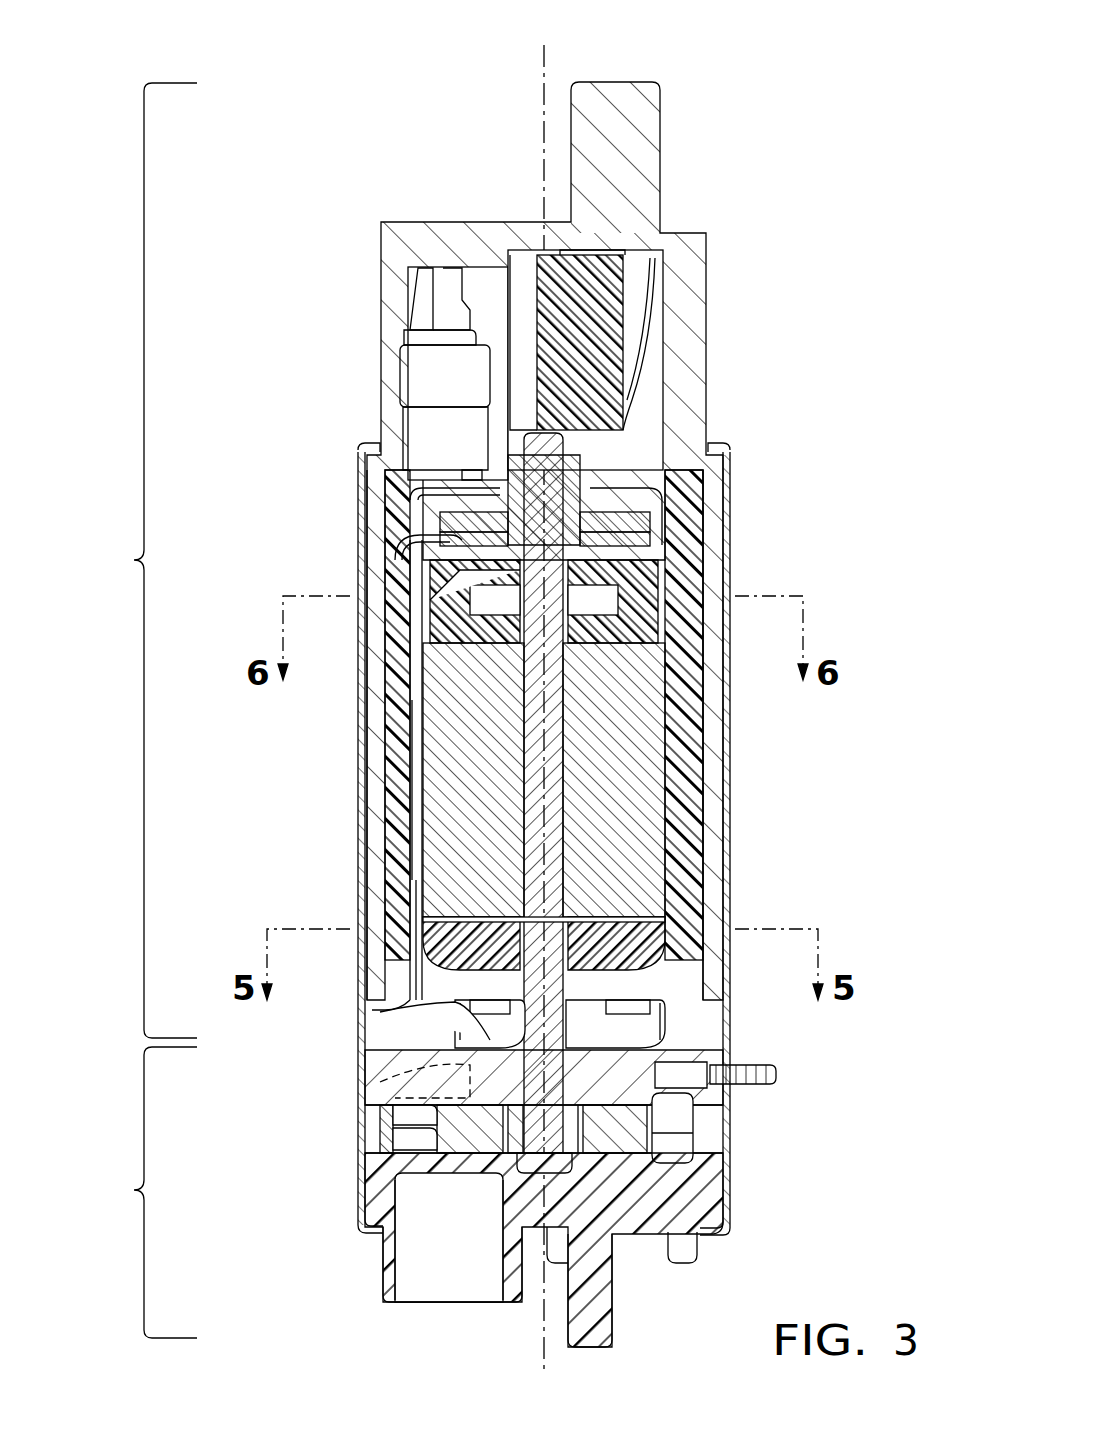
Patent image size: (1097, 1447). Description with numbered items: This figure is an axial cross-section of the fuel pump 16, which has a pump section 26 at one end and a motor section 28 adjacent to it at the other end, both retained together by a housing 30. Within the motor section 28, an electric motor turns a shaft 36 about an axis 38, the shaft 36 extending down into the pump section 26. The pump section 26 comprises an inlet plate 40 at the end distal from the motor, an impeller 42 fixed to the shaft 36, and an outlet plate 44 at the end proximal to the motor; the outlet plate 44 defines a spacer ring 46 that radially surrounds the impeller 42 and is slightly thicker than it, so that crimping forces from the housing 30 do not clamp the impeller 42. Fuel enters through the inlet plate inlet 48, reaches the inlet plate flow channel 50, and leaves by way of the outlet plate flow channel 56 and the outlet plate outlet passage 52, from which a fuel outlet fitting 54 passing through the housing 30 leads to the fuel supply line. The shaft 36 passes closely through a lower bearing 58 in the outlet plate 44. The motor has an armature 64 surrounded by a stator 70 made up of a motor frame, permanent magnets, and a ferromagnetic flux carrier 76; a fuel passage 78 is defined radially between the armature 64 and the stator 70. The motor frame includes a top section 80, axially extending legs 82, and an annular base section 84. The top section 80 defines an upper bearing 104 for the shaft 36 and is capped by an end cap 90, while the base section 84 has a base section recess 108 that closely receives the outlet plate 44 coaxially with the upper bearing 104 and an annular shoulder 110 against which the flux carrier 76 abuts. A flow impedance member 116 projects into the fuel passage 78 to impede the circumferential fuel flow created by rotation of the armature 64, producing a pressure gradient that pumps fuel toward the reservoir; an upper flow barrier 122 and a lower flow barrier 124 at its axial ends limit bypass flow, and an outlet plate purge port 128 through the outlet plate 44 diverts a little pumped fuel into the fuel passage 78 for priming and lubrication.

The fuel pump 16 is at (784, 58).
The pump section 26 is at (142, 1192).
The motor section 28 is at (142, 560).
The housing 30 is at (726, 452).
The shaft 36 is at (553, 800).
The axis 38 is at (556, 40).
The inlet plate 40 is at (700, 1205).
The impeller 42 is at (700, 1145).
The outlet plate 44 is at (690, 1053).
The spacer ring 46 is at (470, 1140).
The inlet plate inlet 48 is at (425, 1285).
The inlet plate flow channel 50 is at (650, 1165).
The outlet plate outlet passage 52 is at (700, 1100).
The fuel outlet fitting 54 is at (740, 1085).
The outlet plate flow channel 56 is at (693, 1120).
The lower bearing 58 is at (490, 1038).
The armature 64 is at (423, 725).
The stator 70 is at (357, 778).
The flux carrier 76 is at (725, 790).
The fuel passage 78 is at (412, 870).
The top section 80 is at (690, 555).
The legs 82 is at (395, 750).
The base section 84 is at (665, 1040).
The end cap 90 is at (706, 300).
The upper bearing 104 is at (570, 440).
The base section recess 108 is at (690, 1020).
The annular shoulder 110 is at (385, 960).
The flow impedance member 116 is at (680, 670).
The upper flow barrier 122 is at (410, 540).
The lower flow barrier 124 is at (416, 895).
The outlet plate purge port 128 is at (380, 1082).